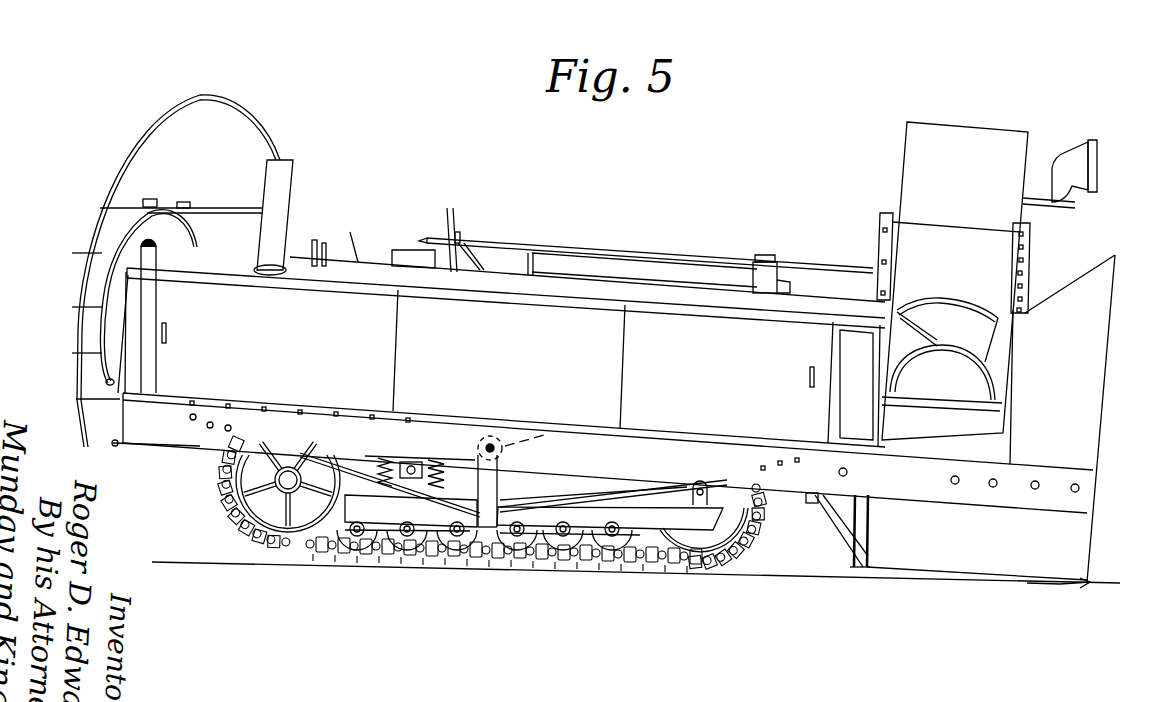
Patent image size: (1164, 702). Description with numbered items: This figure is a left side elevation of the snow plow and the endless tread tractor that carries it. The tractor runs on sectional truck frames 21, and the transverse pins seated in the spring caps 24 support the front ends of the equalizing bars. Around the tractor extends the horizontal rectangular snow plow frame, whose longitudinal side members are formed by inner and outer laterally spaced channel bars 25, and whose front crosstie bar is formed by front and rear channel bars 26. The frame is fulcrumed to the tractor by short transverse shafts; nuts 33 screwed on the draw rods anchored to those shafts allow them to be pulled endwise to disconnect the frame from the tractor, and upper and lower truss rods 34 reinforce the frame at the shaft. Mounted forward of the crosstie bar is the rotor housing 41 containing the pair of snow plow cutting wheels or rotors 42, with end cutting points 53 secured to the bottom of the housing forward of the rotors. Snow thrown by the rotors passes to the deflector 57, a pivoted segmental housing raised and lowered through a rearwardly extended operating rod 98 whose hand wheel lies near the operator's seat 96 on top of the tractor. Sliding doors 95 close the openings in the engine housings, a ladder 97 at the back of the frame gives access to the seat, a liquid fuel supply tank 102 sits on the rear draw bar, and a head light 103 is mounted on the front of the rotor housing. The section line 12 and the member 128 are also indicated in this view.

The section line 12 is at (497, 228).
The sectional truck frames 21 is at (530, 502).
The spring caps 24 is at (408, 483).
The channel bars 25 is at (599, 453).
The front crosstie bar channel bars 26 is at (640, 270).
The nuts 33 is at (497, 445).
The truss rods 34 is at (385, 487).
The rotor housing 41 is at (960, 418).
The rotors 42 is at (944, 349).
The end cutting points 53 is at (1092, 584).
The deflector 57 is at (953, 281).
The sliding doors 95 is at (501, 352).
The seat 96 is at (320, 246).
The ladder 97 is at (118, 178).
The operating rod 98 is at (728, 258).
The liquid fuel supply tank 102 is at (157, 233).
The head light 103 is at (1080, 165).
The angle member 128 is at (568, 426).